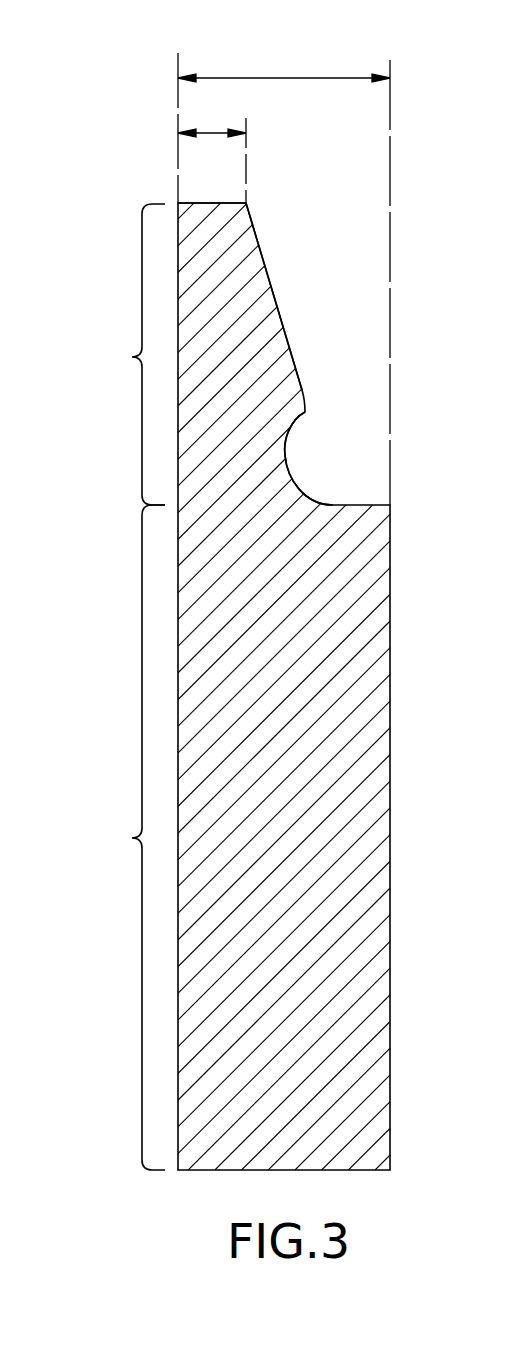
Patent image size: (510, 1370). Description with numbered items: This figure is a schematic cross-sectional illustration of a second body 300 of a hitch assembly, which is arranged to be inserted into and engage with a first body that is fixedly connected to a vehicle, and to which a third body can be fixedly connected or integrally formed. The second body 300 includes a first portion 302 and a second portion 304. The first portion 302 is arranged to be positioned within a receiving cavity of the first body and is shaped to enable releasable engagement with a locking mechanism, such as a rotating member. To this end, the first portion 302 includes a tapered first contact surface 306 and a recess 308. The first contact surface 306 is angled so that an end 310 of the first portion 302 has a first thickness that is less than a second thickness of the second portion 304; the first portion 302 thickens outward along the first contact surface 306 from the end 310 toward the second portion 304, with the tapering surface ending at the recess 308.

The second body 300 is at (103, 162).
The first portion 302 is at (132, 357).
The second portion 304 is at (132, 838).
The first contact surface 306 is at (280, 300).
The recess 308 is at (310, 457).
The end 310 is at (220, 203).